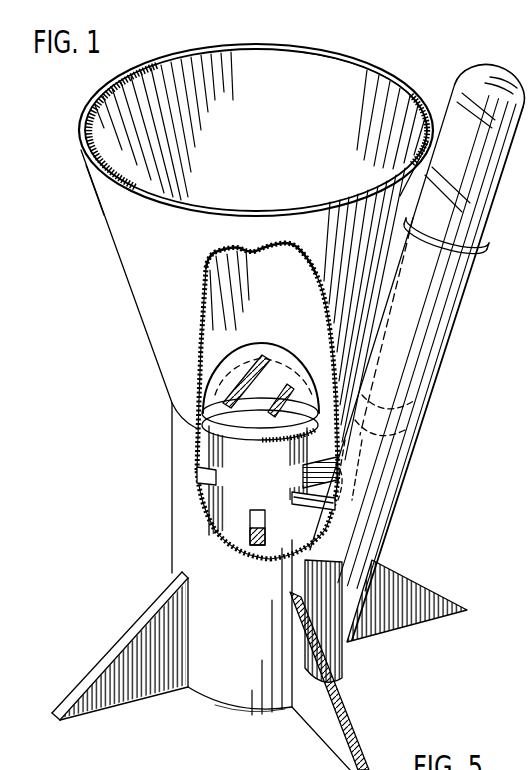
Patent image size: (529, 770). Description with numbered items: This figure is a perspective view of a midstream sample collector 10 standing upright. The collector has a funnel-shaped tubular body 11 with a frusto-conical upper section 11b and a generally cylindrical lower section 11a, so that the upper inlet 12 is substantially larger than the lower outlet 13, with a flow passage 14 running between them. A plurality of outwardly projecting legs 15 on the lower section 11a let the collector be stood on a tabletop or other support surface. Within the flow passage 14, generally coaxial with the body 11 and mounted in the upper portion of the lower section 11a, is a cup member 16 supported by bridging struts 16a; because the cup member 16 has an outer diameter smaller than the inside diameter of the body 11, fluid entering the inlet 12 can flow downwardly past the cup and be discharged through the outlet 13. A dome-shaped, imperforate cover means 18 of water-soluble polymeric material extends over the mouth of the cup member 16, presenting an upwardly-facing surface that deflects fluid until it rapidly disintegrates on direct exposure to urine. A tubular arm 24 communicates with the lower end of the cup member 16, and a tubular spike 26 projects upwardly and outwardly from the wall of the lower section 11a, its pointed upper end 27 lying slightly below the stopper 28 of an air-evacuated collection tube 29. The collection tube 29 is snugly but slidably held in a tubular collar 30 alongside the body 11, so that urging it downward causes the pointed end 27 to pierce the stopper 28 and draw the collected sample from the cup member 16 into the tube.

The midstream sample collector 10 is at (112, 297).
The tubular body 11 is at (158, 366).
The lower section 11a is at (185, 530).
The upper section 11b is at (118, 224).
The upper inlet 12 is at (338, 57).
The lower outlet 13 is at (238, 705).
The flow passage 14 is at (250, 100).
The legs 15 is at (135, 692).
The cup member 16 is at (232, 545).
The struts 16a is at (253, 508).
The cover means 18 is at (258, 362).
The tubular arm 24 is at (290, 548).
The tubular spike 26 is at (380, 497).
The pointed upper end 27 is at (408, 426).
The stopper 28 is at (412, 404).
The collection tube 29 is at (486, 185).
The tubular collar 30 is at (460, 312).